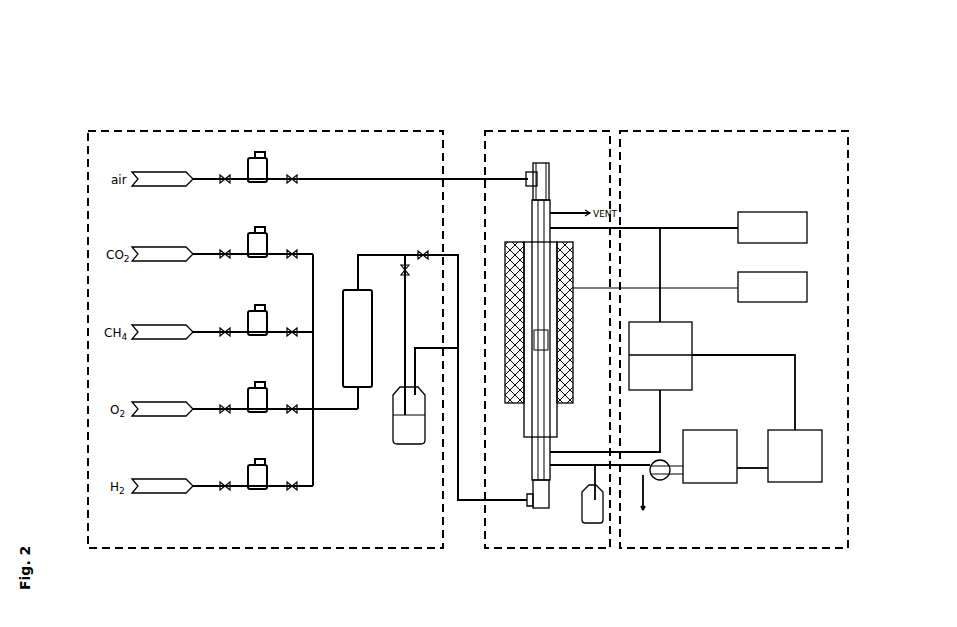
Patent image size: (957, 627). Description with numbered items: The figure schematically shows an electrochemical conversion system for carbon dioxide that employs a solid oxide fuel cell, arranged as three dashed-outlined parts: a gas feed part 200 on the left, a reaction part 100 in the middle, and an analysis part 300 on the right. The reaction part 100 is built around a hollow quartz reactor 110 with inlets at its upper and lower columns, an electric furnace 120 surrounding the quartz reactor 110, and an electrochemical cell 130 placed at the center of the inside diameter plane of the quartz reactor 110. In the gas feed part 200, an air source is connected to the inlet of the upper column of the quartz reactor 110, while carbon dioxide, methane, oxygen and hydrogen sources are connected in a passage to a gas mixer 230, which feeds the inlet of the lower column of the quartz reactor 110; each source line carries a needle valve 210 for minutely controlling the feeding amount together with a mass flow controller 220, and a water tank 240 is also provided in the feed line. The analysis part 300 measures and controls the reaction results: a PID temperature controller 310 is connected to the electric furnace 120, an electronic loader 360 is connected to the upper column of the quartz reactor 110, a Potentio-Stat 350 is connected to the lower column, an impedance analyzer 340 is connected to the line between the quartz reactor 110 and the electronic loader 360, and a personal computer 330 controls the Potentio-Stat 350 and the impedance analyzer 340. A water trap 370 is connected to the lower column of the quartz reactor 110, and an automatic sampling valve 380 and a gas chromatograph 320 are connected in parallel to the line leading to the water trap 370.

The reaction part 100 is at (538, 131).
The quartz reactor 110 is at (550, 195).
The electric furnace 120 is at (511, 280).
The electrochemical cell 130 is at (538, 340).
The gas feed part 200 is at (173, 131).
The needle valve 210 is at (226, 172).
The mass flow controller 220 is at (270, 165).
The gas mixer 230 is at (350, 290).
The water tank 240 is at (410, 444).
The analysis part 300 is at (752, 131).
The PID temperature controller 310 is at (807, 288).
The gas chromatograph 320 is at (710, 483).
The personal computer 330 is at (795, 482).
The impedance analyzer 340 is at (692, 340).
The Potentio-Stat 350 is at (692, 372).
The electronic loader 360 is at (807, 228).
The water trap 370 is at (592, 523).
The automatic sampling valve 380 is at (662, 483).